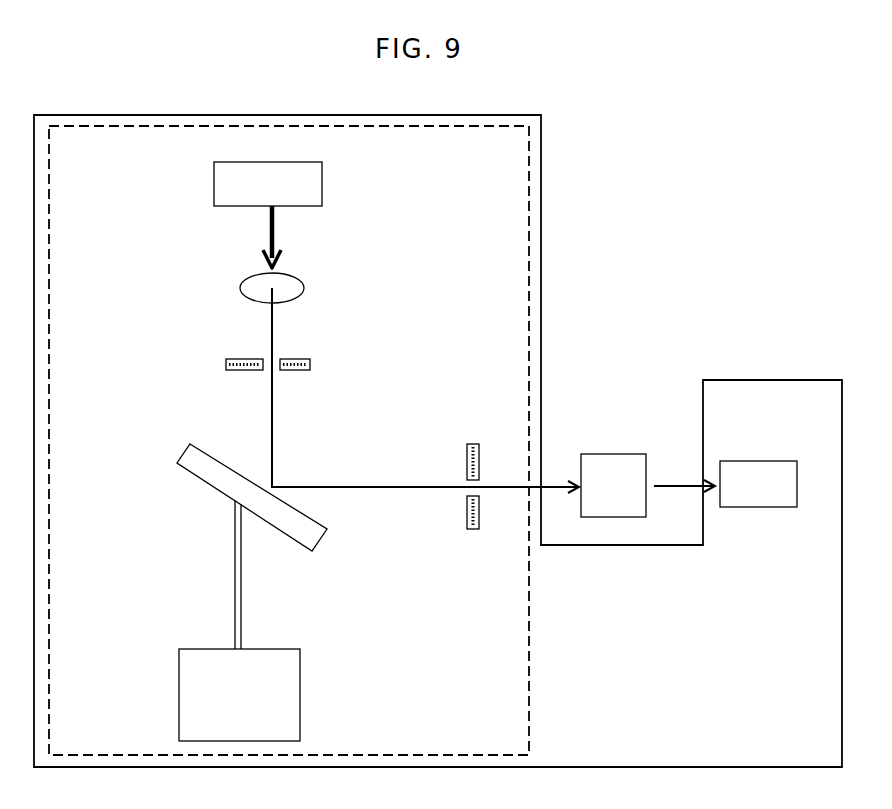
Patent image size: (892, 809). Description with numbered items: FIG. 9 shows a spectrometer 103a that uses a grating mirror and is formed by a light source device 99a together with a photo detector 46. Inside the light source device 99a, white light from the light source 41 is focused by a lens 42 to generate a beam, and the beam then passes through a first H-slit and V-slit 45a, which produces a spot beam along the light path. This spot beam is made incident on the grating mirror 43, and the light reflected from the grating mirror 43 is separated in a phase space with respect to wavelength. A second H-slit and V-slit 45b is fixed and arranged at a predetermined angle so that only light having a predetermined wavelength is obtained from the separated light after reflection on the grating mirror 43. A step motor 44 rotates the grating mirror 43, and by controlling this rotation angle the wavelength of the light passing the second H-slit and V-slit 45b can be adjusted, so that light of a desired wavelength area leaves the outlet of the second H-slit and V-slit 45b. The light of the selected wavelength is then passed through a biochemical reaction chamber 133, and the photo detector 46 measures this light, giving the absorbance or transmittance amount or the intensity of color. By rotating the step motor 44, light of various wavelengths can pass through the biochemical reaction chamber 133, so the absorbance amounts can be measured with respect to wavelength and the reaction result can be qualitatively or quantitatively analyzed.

The light source 41 is at (303, 174).
The lens 42 is at (297, 286).
The grating mirror 43 is at (190, 463).
The step motor 44 is at (195, 691).
The first H-slit and V-slit 45a is at (226, 364).
The second H-slit and V-slit 45b is at (472, 530).
The photo detector 46 is at (770, 470).
The biochemical reaction chamber 133 is at (632, 465).
The light source device 99a is at (534, 267).
The spectrometer 103a is at (544, 357).